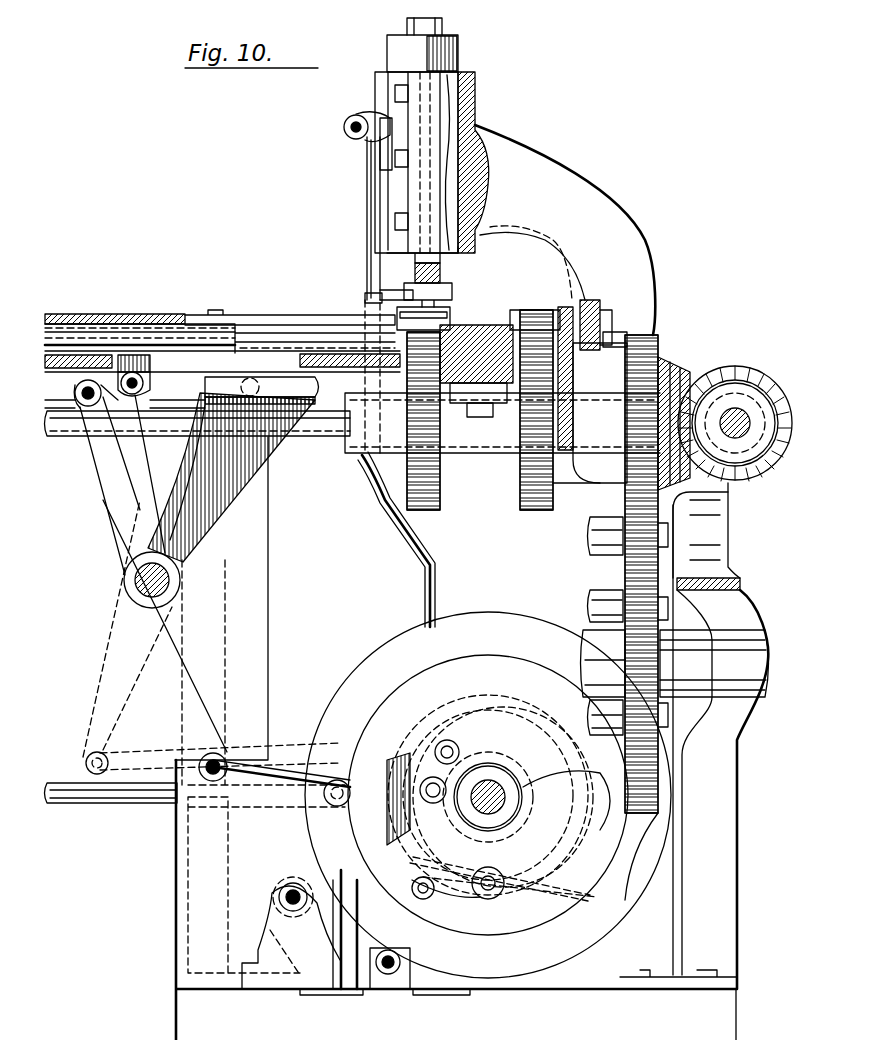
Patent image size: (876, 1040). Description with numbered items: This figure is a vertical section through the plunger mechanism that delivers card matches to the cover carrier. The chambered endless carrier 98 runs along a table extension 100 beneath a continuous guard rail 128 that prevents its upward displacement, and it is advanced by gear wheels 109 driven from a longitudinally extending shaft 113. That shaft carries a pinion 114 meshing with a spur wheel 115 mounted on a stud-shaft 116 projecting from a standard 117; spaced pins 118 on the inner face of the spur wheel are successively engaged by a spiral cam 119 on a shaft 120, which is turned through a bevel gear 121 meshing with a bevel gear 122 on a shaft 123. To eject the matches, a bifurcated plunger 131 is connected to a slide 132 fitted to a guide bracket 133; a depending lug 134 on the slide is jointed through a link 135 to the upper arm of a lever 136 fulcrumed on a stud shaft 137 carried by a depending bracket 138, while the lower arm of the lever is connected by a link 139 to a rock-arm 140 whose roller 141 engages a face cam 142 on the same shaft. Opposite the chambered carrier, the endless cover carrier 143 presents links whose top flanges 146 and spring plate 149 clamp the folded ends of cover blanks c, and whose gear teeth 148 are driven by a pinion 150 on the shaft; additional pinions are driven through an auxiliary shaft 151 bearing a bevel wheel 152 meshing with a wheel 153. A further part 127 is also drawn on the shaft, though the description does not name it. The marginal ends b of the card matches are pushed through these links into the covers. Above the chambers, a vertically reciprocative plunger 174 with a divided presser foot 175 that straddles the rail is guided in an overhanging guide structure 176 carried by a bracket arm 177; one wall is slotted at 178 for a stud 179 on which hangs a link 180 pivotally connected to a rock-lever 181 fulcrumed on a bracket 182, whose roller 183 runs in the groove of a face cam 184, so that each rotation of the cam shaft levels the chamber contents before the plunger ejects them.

The plunger 174 is at (458, 55).
The guide structure 176 is at (480, 97).
The stud 179 is at (344, 127).
The slot 178 is at (372, 155).
The link 180 is at (366, 183).
The bracket arm 177 is at (565, 230).
The top flanges 146 is at (560, 260).
The endless carrier 143 is at (590, 300).
The spring plate 149 is at (610, 305).
The gear teeth 148 is at (628, 322).
The guide bracket 133 is at (107, 314).
The bifurcated plunger 131 is at (307, 315).
The slide 132 is at (148, 338).
The shaft 113 is at (60, 355).
The depending lug 134 is at (138, 373).
The endless carrier 98 is at (380, 296).
The link 135 is at (102, 405).
The depending bracket 138 is at (212, 483).
The stud shaft 137 is at (135, 583).
The lever 136 is at (112, 525).
The link 139 is at (288, 765).
The shaft 123 is at (80, 804).
The bracket 182 is at (326, 933).
The gear wheels 109 is at (398, 510).
The table extensions 100 is at (478, 420).
The rail 128 is at (410, 312).
The presser foot 175 is at (440, 290).
The marginal ends b is at (476, 332).
The gear 127 is at (487, 325).
The cover blanks c is at (579, 381).
The pinion 150 is at (540, 505).
The pinion 114 is at (655, 333).
The wheel 153 is at (675, 365).
The bevel wheel 152 is at (745, 366).
The auxiliary shaft 151 is at (748, 412).
The spur wheel 115 is at (700, 555).
The stud-shaft 116 is at (770, 655).
The standard 117 is at (723, 755).
The pins 118 is at (592, 605).
The face cam 142 is at (655, 831).
The spiral cam 119 is at (525, 668).
The face cam 184 is at (488, 798).
The roller 141 is at (520, 740).
The bevel gear 121 is at (465, 697).
The roller 183 is at (503, 832).
The shaft 120 is at (500, 808).
The rock-lever 181 is at (435, 900).
The bevel gear 122 is at (400, 765).
The rock-arm 140 is at (428, 983).